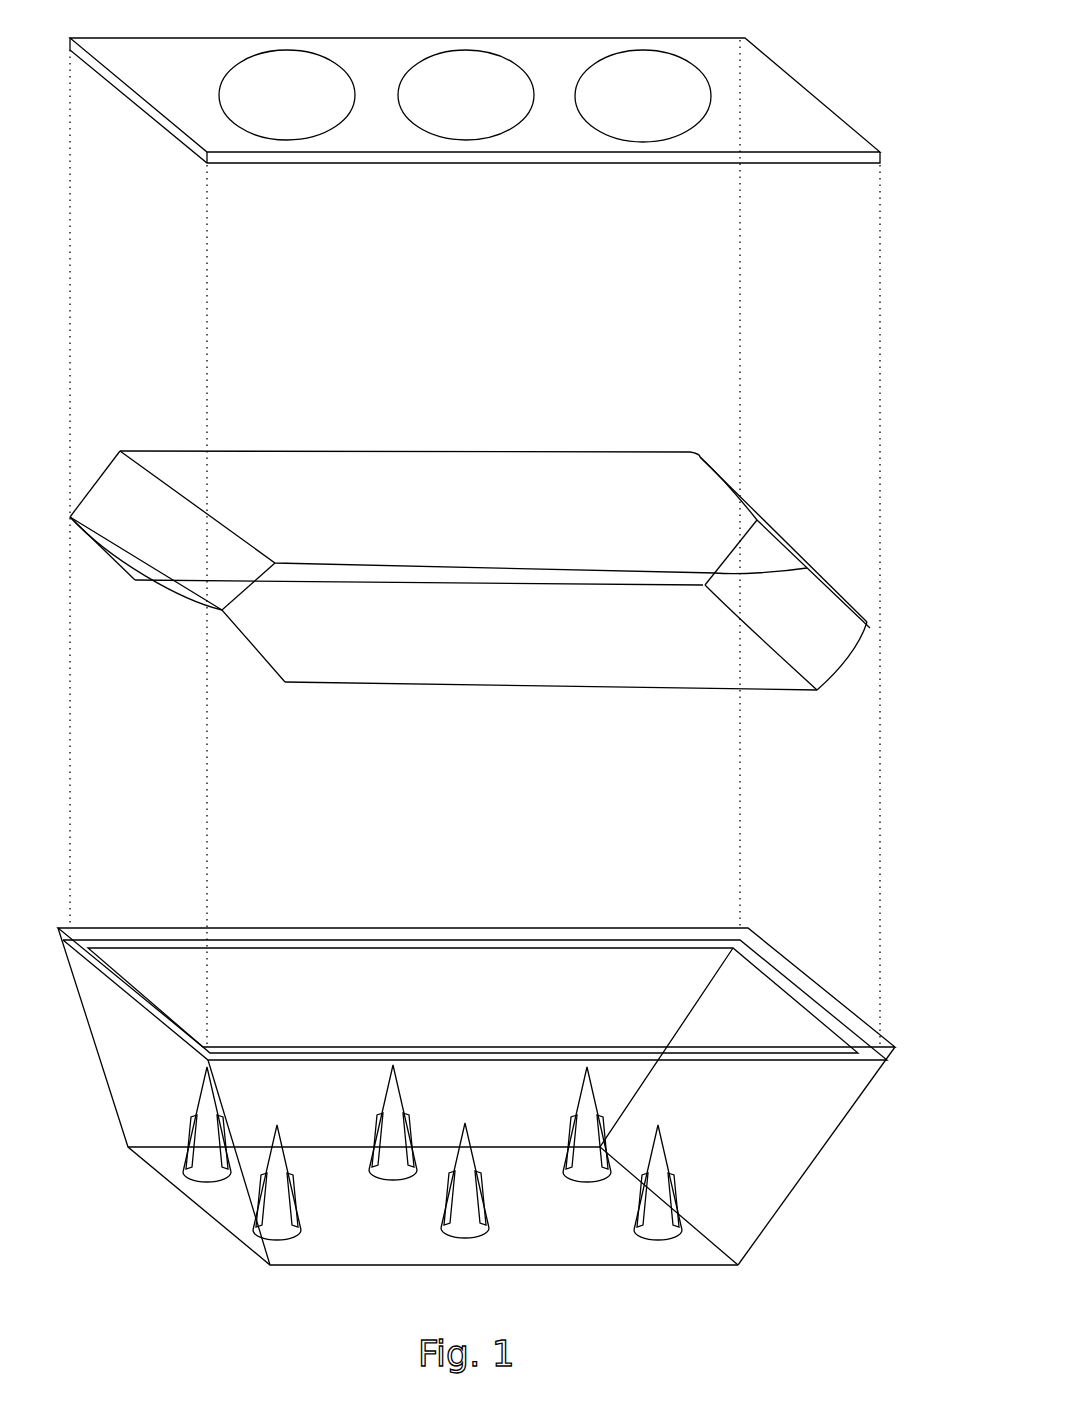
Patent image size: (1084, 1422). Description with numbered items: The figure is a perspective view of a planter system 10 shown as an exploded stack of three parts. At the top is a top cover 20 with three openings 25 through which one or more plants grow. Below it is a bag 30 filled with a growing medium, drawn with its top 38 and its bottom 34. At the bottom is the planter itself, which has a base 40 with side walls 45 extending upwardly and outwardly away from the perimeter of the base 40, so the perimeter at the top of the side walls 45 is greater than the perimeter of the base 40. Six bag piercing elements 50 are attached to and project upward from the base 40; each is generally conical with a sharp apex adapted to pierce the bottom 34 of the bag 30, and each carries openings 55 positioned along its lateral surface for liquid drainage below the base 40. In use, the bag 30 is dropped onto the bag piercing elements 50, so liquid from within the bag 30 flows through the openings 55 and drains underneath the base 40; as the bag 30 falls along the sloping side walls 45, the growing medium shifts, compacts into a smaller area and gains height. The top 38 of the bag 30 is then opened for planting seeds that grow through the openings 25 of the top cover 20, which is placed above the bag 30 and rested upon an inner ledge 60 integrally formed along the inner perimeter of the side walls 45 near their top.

The planter system 10 is at (155, 1284).
The top cover 20 is at (797, 82).
The opening 25 is at (643, 50).
The bag 30 is at (510, 566).
The bottom of the bag 34 is at (597, 690).
The top of the bag 38 is at (380, 451).
The base 40 is at (476, 1115).
The side walls 45 is at (812, 1165).
The bag piercing element 50 is at (432, 1155).
The opening 55 is at (287, 1188).
The inner ledge 60 is at (763, 970).